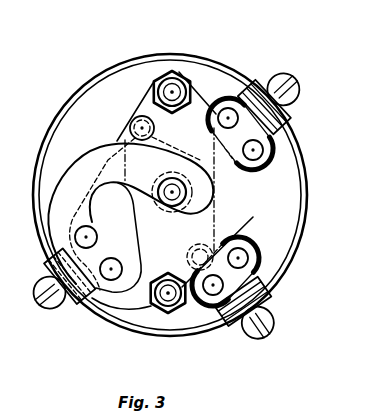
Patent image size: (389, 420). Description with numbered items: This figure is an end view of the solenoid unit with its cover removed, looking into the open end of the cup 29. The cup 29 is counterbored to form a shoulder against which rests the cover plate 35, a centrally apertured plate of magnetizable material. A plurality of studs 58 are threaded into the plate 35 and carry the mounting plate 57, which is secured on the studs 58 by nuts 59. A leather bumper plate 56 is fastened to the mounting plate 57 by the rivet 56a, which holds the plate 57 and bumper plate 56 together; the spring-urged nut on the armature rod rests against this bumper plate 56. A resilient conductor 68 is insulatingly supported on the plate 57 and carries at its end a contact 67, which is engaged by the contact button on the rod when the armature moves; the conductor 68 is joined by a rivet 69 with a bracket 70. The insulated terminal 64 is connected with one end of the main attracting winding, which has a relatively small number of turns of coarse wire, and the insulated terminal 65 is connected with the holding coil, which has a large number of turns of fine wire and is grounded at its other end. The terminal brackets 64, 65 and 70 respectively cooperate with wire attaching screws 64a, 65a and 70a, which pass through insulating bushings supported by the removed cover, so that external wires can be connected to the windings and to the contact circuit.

The cup 29 is at (302, 210).
The cover plate 35 is at (304, 197).
The leather bumper plate 56 is at (216, 203).
The rivet 56a is at (130, 128).
The mounting plate 57 is at (172, 106).
The studs 58 is at (165, 90).
The nuts 59 is at (155, 93).
The insulated terminal 64 is at (257, 250).
The wire attaching screw 64a is at (274, 318).
The insulated terminal 65 is at (264, 135).
The wire attaching screw 65a is at (300, 95).
The contact 67 is at (172, 198).
The resilient conductor 68 is at (80, 159).
The rivet 69 is at (89, 235).
The bracket 70 is at (93, 308).
The wire attaching screw 70a is at (50, 312).